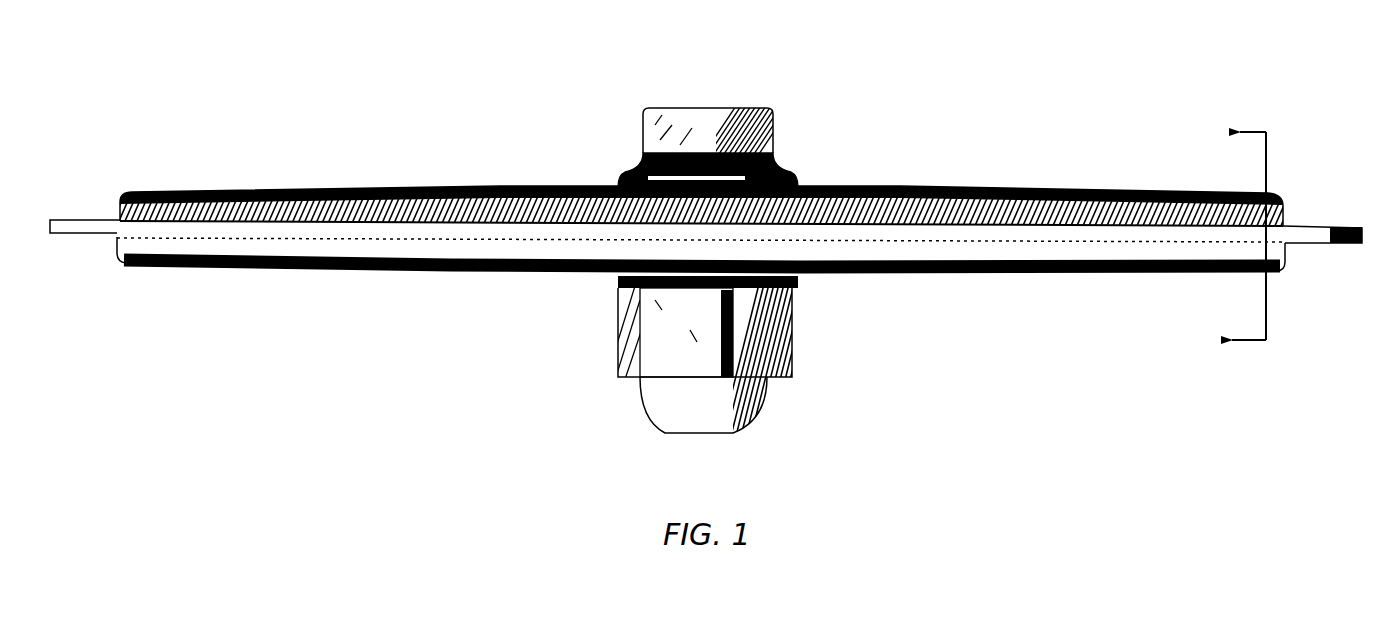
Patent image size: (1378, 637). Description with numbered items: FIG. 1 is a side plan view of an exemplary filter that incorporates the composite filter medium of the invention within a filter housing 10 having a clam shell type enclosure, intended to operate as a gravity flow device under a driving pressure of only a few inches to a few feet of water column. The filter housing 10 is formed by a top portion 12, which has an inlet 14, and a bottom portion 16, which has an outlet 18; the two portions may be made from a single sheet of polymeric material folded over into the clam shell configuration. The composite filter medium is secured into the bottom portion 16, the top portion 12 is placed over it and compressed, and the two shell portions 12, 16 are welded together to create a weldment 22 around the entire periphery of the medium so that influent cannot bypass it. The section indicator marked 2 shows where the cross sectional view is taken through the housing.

The filter housing 10 is at (882, 108).
The top portion 12 is at (225, 195).
The inlet 14 is at (690, 117).
The bottom portion 16 is at (317, 252).
The outlet 18 is at (703, 423).
The weldment 22 is at (70, 230).
The section line 2- 2 is at (1239, 228).